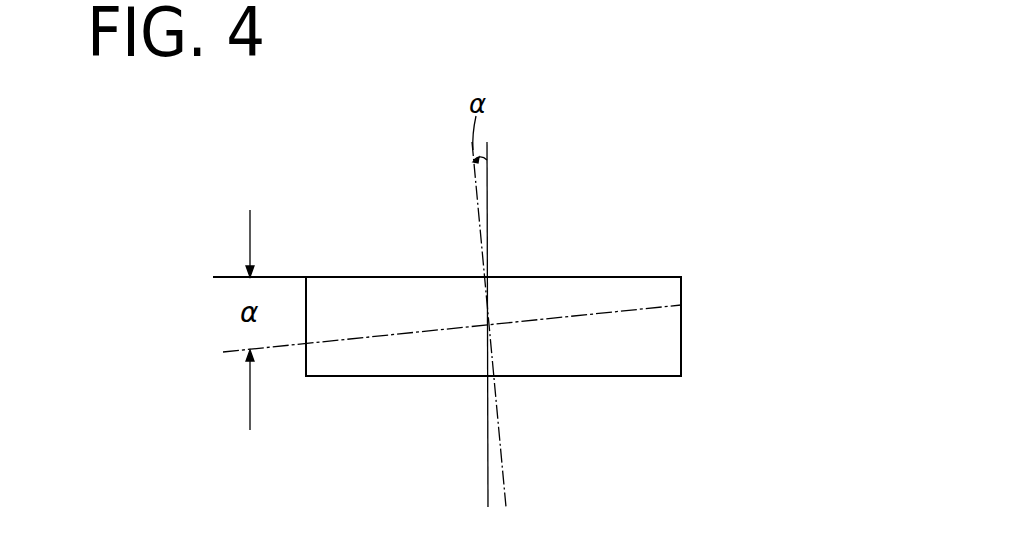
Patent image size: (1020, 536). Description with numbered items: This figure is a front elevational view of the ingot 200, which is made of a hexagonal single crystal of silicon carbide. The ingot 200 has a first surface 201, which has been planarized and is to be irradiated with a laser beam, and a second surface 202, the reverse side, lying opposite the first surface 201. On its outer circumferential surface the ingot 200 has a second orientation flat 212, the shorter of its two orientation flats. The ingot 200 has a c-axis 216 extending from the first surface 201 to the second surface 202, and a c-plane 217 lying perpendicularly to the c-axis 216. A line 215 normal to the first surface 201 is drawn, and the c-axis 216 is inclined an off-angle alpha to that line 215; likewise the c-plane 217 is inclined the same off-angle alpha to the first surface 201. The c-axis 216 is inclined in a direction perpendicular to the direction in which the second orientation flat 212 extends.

The ingot 200 is at (700, 280).
The first surface 201 is at (363, 277).
The second surface 202 is at (560, 377).
The second orientation flat 212 is at (306, 360).
The line normal to the first surface 215 is at (488, 177).
The c-axis 216 is at (476, 197).
The c-plane 217 is at (556, 317).